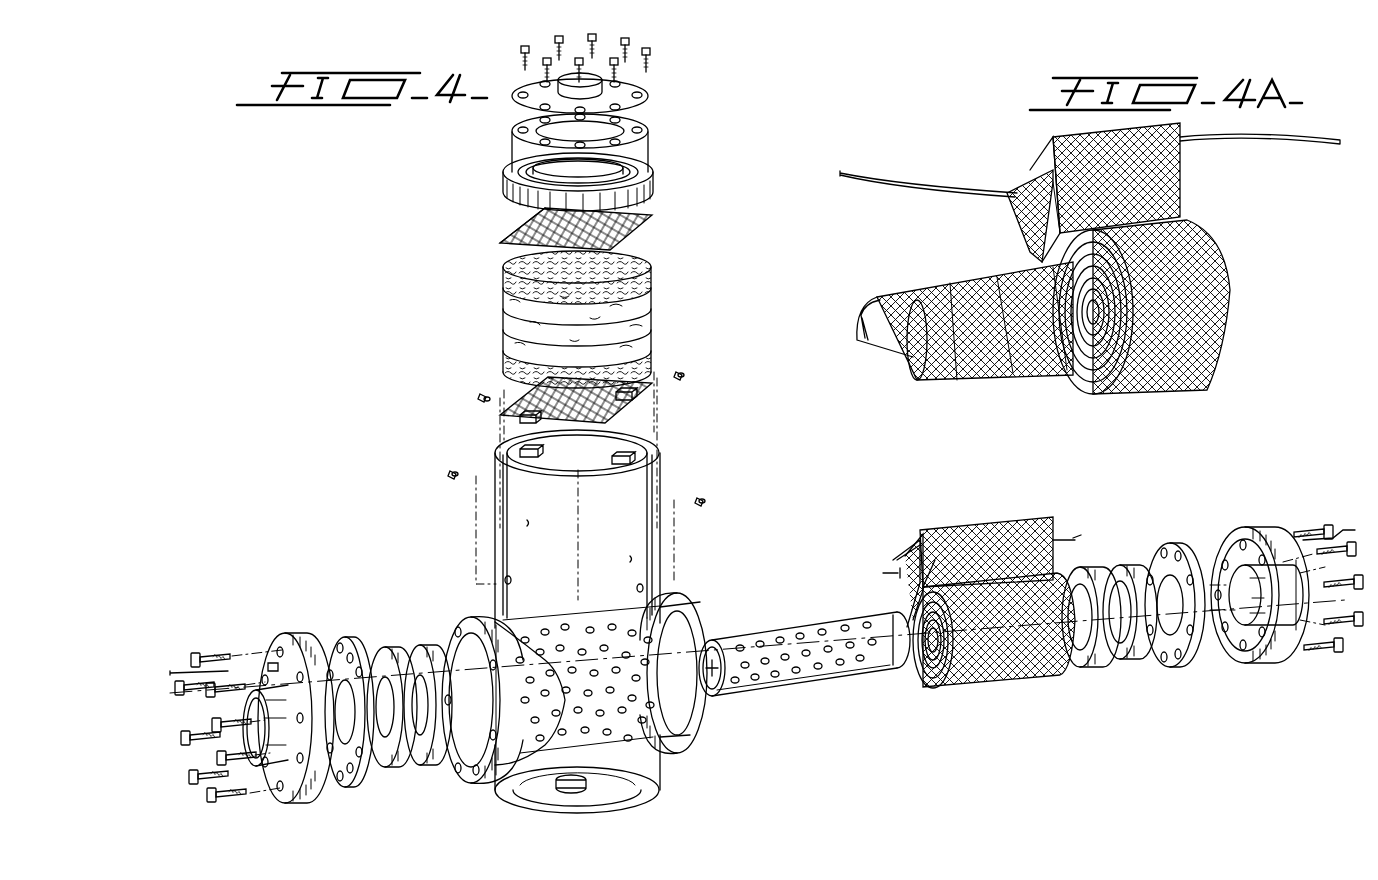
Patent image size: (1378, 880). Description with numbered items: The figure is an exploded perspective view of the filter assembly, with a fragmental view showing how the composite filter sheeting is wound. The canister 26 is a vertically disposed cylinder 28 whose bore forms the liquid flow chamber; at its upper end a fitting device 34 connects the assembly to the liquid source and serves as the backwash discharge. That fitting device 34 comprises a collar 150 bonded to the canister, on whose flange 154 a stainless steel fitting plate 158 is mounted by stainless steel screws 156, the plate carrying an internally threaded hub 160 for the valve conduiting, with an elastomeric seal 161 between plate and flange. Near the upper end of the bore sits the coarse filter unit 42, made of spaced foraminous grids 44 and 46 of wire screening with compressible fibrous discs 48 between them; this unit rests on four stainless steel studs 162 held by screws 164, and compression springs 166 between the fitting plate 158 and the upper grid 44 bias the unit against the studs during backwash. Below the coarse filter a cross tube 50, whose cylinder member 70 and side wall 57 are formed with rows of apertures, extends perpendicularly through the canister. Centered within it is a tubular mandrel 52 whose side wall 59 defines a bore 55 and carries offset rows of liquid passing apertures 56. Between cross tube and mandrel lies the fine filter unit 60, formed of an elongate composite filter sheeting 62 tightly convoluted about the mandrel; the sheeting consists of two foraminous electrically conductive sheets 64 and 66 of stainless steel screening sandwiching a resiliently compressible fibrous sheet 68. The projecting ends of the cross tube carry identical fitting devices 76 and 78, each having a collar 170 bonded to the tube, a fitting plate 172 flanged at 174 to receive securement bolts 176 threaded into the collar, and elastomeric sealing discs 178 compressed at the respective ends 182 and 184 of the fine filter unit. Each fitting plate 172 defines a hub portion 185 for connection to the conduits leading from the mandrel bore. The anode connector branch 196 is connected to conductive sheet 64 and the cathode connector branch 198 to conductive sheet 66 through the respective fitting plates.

In FIG. 4, the canister 26 is at (715, 415).
In FIG. 4, the cylinder 28 is at (660, 470).
In FIG. 4, the fitting device 34 is at (668, 145).
In FIG. 4, the coarse filter unit 42 is at (560, 319).
In FIG. 4, the foraminous grid 44 is at (510, 240).
In FIG. 4, the foraminous grid 46 is at (515, 392).
In FIG. 4, the discs 48 is at (650, 355).
In FIG. 4, the cross tube 50 is at (607, 681).
In FIG. 4, the tubular mandrel 52 is at (804, 626).
In FIG. 4, the bore 55 is at (716, 685).
In FIG. 4, the liquid passing apertures 56 is at (815, 632).
In FIG. 4, the side wall 57 is at (475, 773).
In FIG. 4, the side wall 59 is at (892, 660).
In FIG. 4, the fine filter unit 60 is at (1005, 596).
In FIG. 4A, the fine filter unit 60 is at (1225, 280).
In FIG. 4, the composite filter sheeting 62 is at (985, 520).
In FIG. 4A, the composite filter sheeting 62 is at (995, 212).
In FIG. 4, the foraminous electrically conductive sheet 64 is at (905, 560).
In FIG. 4A, the foraminous electrically conductive sheet 64 is at (1010, 195).
In FIG. 4, the foraminous electrically conductive sheet 66 is at (940, 540).
In FIG. 4A, the foraminous electrically conductive sheet 66 is at (1075, 138).
In FIG. 4, the resiliently compressible fibrous sheet 68 is at (918, 540).
In FIG. 4A, the resiliently compressible fibrous sheet 68 is at (1040, 165).
In FIG. 4, the cylinder member 70 is at (660, 675).
In FIG. 4, the fitting device 76 is at (312, 605).
In FIG. 4, the fitting device 78 is at (1262, 495).
In FIG. 4, the collar 150 is at (650, 185).
In FIG. 4, the flange 154 is at (530, 170).
In FIG. 4, the stainless steel screws 156 is at (520, 58).
In FIG. 4, the fitting plate 158 is at (640, 118).
In FIG. 4, the internally threaded hub 160 is at (555, 97).
In FIG. 4, the elastomeric seal 161 is at (645, 145).
In FIG. 4, the stainless steel studs 162 is at (520, 452).
In FIG. 4, the stainless steel screws 164 is at (448, 474).
In FIG. 4, the compression springs 166 is at (612, 228).
In FIG. 4, the collar 170 is at (465, 630).
In FIG. 4, the fitting plate 172 is at (1270, 665).
In FIG. 4, the flange 174 is at (1250, 555).
In FIG. 4, the securement bolts 176 is at (197, 655).
In FIG. 4, the elastomeric sealing discs 178 is at (347, 640).
In FIG. 4, the end of filter unit 182 is at (933, 688).
In FIG. 4, the end of filter unit 184 is at (1120, 658).
In FIG. 4, the hub portion 185 is at (1295, 630).
In FIG. 4, the connector branch 196 is at (888, 573).
In FIG. 4A, the connector branch 196 is at (843, 178).
In FIG. 4, the connector branch 198 is at (1072, 538).
In FIG. 4A, the connector branch 198 is at (1293, 142).